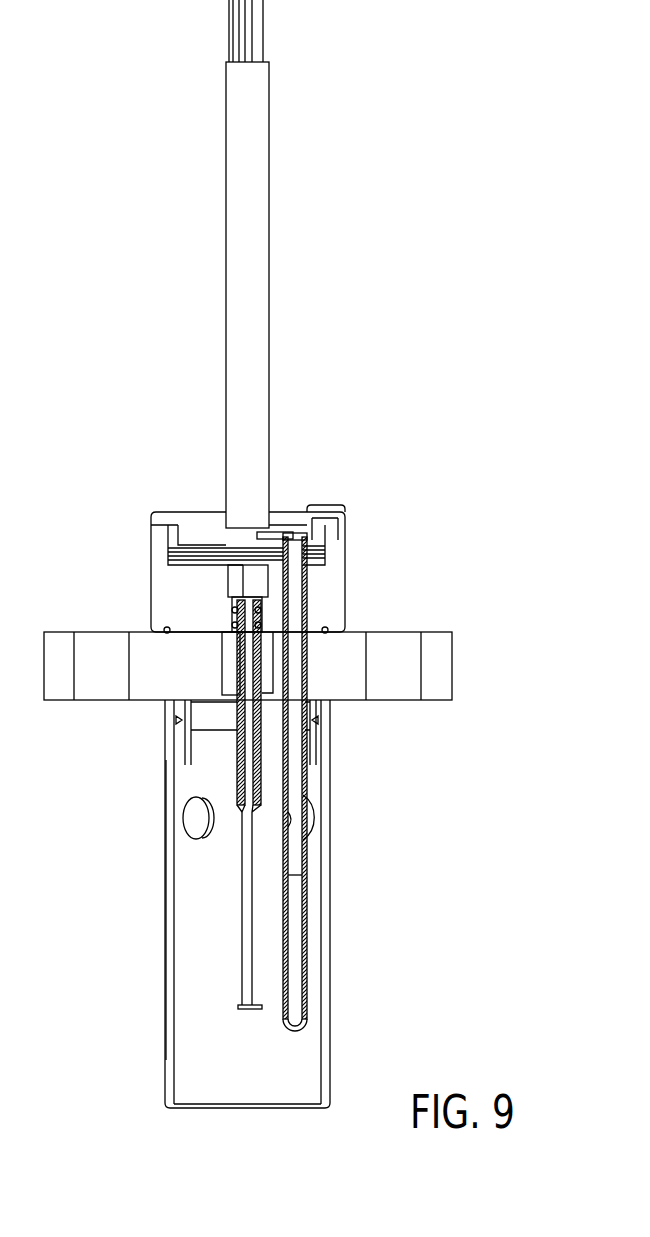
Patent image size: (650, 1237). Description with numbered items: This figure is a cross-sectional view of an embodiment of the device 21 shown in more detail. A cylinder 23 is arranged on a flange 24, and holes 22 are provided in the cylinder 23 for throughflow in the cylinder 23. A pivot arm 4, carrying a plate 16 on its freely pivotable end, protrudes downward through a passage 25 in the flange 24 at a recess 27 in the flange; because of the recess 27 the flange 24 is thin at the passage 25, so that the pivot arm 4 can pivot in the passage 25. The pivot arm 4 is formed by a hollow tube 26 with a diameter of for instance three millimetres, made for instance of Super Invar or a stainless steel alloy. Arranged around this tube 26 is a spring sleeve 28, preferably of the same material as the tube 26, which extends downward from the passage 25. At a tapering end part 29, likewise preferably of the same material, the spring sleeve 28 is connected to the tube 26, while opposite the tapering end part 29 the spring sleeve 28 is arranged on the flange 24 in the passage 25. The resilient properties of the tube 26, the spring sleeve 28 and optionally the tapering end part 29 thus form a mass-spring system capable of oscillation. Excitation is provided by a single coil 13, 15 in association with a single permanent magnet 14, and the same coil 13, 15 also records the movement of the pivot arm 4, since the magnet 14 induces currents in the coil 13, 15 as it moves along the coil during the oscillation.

The sensor probe 21 is at (343, 172).
The coil 13 is at (310, 514).
The coil 15 is at (248, 572).
The permanent magnet 14 is at (235, 573).
The flange 24 is at (405, 630).
The recess 27 is at (228, 677).
The passage 25 is at (237, 700).
The cylinder 23 is at (330, 852).
The pivot arm 4 is at (240, 942).
The holes 22 is at (195, 815).
The hollow tube 26 is at (250, 882).
The plate 16 is at (236, 1010).
The spring sleeve 28 is at (258, 750).
The tapering end part 29 is at (257, 795).